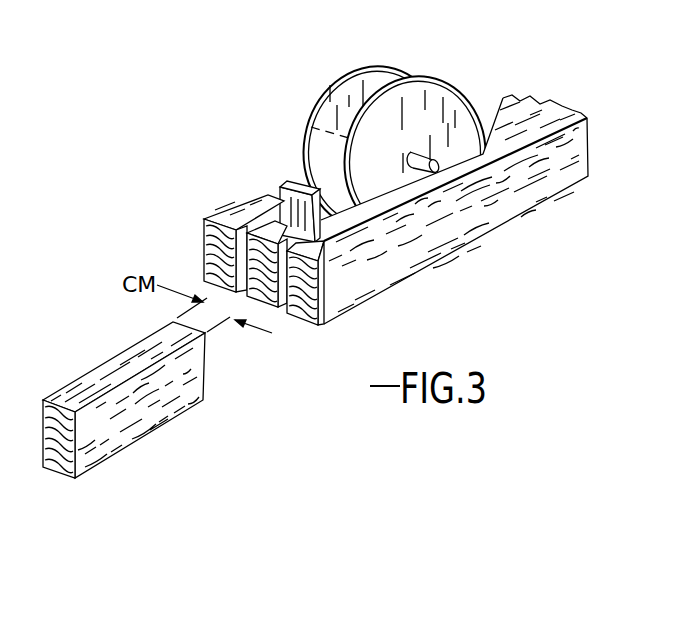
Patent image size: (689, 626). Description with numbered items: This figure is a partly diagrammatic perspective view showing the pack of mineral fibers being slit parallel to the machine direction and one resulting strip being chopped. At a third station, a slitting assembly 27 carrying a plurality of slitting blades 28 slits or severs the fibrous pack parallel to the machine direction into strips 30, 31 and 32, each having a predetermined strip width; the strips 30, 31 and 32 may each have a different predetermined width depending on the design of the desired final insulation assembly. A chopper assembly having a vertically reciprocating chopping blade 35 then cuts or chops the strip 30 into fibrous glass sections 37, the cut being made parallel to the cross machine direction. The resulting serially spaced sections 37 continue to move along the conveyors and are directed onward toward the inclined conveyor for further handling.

The slitting assembly 27 is at (384, 60).
The slitting blades 28 is at (307, 143).
The strip 30 is at (312, 330).
The strip 31 is at (276, 307).
The strip 32 is at (204, 268).
The chopping blade 35 is at (330, 244).
The fibrous glass sections 37 is at (163, 423).